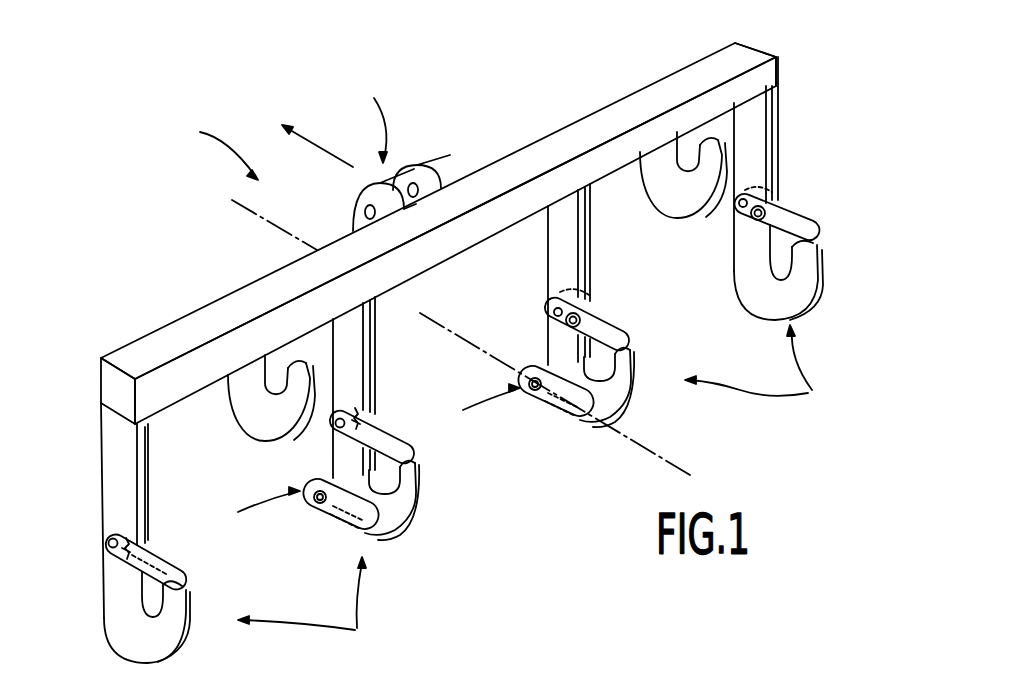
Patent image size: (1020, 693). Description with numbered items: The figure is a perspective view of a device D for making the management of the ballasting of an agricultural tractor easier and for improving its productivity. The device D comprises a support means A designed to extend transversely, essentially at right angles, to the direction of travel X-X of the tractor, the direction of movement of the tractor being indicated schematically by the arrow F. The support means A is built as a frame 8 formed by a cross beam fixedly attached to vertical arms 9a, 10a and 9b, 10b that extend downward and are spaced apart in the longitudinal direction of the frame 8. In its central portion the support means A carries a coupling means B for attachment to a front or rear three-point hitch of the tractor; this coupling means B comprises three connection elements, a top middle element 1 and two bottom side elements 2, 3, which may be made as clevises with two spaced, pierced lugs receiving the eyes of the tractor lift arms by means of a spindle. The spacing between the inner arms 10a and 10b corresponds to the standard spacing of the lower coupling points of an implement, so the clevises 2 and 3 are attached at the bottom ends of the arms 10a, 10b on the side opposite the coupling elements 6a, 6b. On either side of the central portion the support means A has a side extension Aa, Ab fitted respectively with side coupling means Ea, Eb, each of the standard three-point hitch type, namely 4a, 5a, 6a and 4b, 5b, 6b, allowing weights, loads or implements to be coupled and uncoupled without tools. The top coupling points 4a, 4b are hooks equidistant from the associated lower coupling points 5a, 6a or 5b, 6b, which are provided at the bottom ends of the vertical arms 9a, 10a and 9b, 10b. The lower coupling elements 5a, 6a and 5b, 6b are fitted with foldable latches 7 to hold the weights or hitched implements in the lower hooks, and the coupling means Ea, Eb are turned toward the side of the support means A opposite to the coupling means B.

The top middle element 1 is at (419, 155).
The bottom side element 2 is at (325, 517).
The bottom side element 3 is at (550, 395).
The top coupling point 4a is at (248, 413).
The top coupling point 4b is at (677, 190).
The lower coupling element 5a is at (127, 637).
The lower coupling element 5b is at (802, 283).
The lower coupling element 6a is at (393, 523).
The lower coupling element 6b is at (610, 420).
The foldable latch 7 is at (163, 567).
The frame 8 is at (177, 333).
The vertical arm 9a is at (113, 467).
The vertical arm 9b is at (757, 148).
The inner arm 10a is at (357, 362).
The inner arm 10b is at (560, 243).
The support means A is at (438, 228).
The side extension Aa is at (130, 360).
The side extension Ab is at (732, 58).
The coupling means B is at (367, 297).
The device D is at (220, 146).
The arrow F is at (331, 153).
The direction of travel X is at (235, 214).
The side coupling means Ea is at (315, 605).
The side coupling means Eb is at (765, 366).